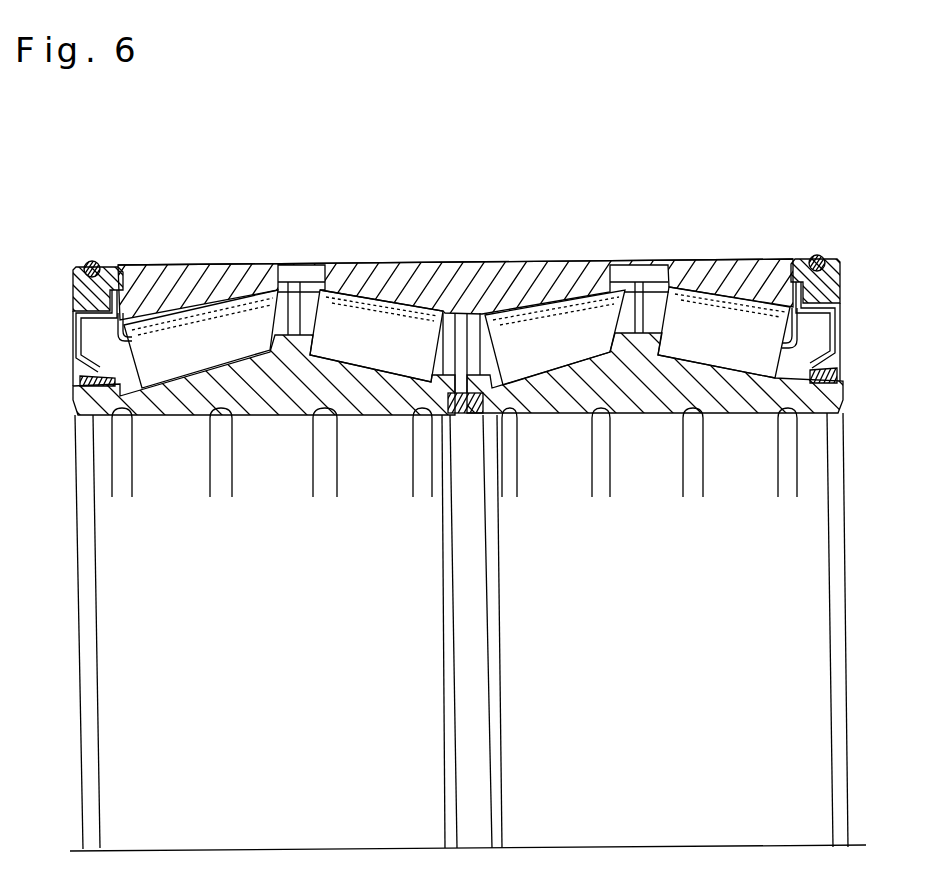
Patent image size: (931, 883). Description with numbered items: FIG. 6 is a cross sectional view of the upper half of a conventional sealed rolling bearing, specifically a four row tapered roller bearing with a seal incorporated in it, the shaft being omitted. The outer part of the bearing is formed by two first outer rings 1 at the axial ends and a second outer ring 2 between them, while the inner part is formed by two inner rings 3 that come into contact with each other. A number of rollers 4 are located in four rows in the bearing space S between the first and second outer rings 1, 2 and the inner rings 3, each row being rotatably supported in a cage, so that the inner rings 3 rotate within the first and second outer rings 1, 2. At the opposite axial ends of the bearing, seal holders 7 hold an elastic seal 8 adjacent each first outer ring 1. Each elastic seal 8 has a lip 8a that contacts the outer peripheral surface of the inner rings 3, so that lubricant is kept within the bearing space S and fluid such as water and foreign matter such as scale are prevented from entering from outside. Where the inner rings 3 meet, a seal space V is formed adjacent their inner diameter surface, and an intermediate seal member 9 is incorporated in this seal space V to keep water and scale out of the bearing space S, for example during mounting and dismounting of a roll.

The first outer ring 1 is at (148, 266).
The second outer ring 2 is at (368, 266).
The inner ring 3 is at (277, 416).
The roller 4 is at (203, 300).
The seal holder 7 is at (73, 268).
The elastic seal 8 is at (73, 338).
The lip 8a is at (860, 410).
The intermediate seal member 9 is at (468, 414).
The bearing space S is at (291, 282).
The seal space V is at (461, 413).